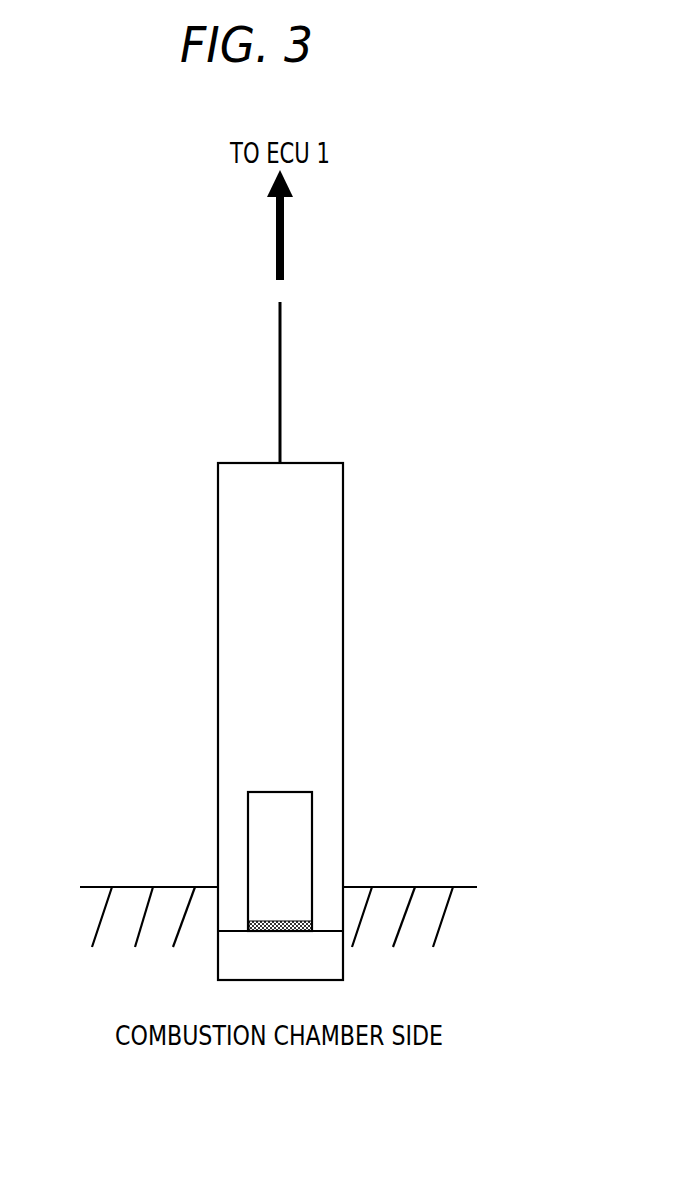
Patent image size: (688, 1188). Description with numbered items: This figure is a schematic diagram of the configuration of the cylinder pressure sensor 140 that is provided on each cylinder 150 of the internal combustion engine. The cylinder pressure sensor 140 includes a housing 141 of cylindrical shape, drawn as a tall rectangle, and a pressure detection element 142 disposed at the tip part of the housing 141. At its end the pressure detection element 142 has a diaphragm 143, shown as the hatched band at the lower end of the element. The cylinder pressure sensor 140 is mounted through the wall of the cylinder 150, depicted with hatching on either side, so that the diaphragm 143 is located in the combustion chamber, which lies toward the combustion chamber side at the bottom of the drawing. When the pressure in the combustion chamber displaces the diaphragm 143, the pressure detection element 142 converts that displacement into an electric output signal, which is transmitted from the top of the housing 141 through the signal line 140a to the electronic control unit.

The cylinder pressure sensor 140 is at (132, 451).
The signal line 140a is at (278, 362).
The housing 141 is at (238, 587).
The pressure detection element 142 is at (268, 836).
The diaphragm 143 is at (277, 931).
The cylinder 150 is at (377, 943).